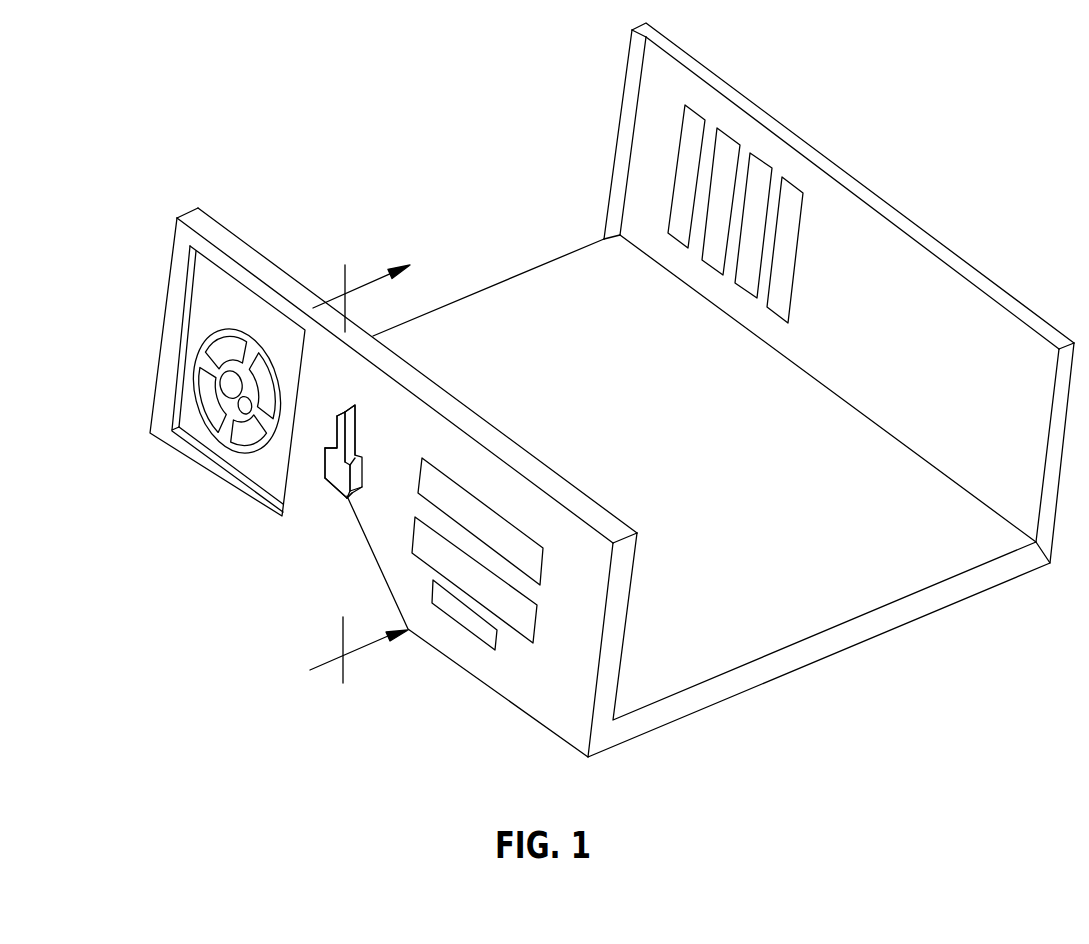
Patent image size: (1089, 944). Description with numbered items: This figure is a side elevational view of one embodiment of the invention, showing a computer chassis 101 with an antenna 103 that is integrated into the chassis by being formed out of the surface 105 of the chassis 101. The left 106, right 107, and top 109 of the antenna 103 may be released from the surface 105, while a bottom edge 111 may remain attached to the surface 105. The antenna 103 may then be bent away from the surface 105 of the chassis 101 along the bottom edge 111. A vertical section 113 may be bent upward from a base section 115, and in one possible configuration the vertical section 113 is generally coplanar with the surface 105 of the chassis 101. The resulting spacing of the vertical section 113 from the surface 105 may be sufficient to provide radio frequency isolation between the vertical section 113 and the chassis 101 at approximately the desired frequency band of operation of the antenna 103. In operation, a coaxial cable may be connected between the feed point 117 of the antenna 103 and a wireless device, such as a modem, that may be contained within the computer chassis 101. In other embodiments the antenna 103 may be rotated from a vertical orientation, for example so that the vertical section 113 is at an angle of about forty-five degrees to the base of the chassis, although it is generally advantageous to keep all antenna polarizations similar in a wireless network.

The chassis 101 is at (955, 625).
The antenna 103 is at (325, 449).
The surface 105 is at (366, 517).
The left of the antenna 106 is at (322, 472).
The right of the antenna 107 is at (345, 481).
The top of the antenna 109 is at (340, 403).
The bottom edge 111 is at (348, 494).
The vertical section 113 is at (337, 420).
The base section 115 is at (337, 490).
The feed point 117 is at (355, 408).